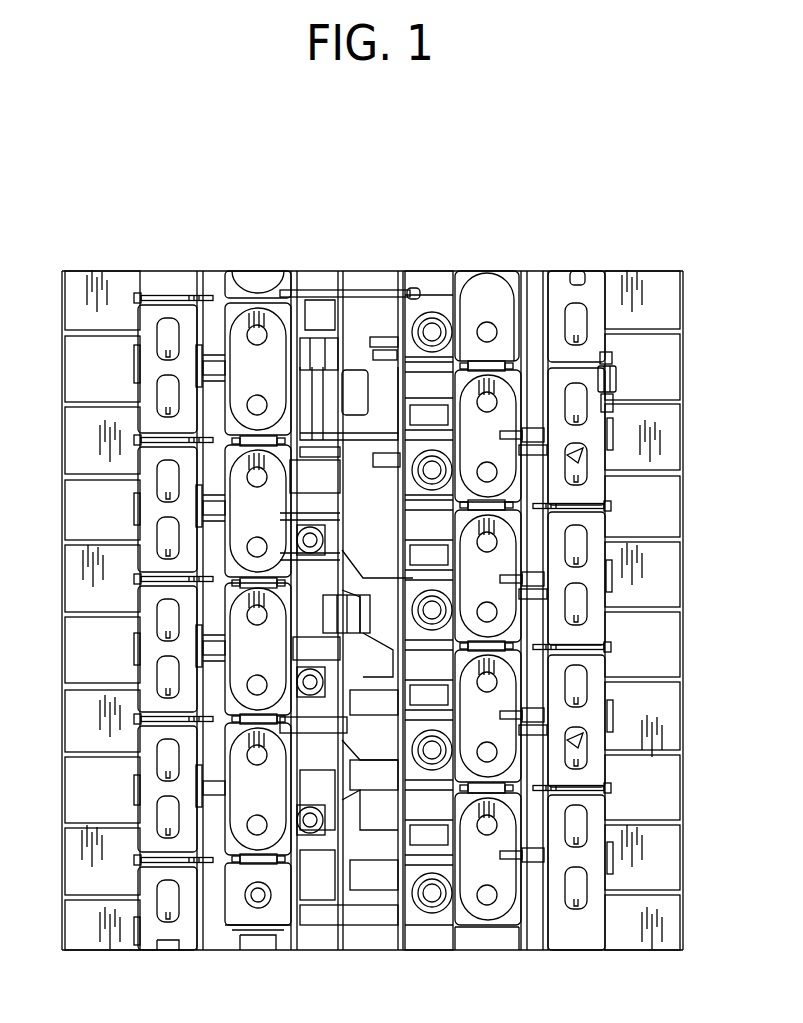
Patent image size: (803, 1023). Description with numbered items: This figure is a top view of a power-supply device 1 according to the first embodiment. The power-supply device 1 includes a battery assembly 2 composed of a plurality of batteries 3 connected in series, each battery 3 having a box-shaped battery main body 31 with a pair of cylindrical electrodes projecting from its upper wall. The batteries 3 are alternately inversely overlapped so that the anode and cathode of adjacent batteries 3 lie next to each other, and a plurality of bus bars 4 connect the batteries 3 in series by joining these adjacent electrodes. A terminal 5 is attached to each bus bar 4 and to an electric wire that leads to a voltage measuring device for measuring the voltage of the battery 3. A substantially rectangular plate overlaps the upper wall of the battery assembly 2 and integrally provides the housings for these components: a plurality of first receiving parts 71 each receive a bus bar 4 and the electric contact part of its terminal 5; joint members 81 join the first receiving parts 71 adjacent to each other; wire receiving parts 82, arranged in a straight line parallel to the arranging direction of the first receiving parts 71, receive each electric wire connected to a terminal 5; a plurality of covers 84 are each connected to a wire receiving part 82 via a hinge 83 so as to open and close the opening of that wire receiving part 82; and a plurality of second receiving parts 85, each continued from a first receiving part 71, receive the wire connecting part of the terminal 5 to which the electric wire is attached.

The power-supply device 1 is at (633, 137).
The battery assembly 2 is at (633, 208).
The battery 3 is at (636, 270).
The battery main body 31 is at (665, 296).
The bus bar 4 is at (247, 350).
The terminal 5 is at (215, 399).
The first receiving part 71 is at (523, 329).
The joint member 81 is at (612, 365).
The wire receiving part 82 is at (608, 524).
The hinge 83 is at (612, 431).
The cover 84 is at (596, 466).
The second receiving part 85 is at (530, 450).